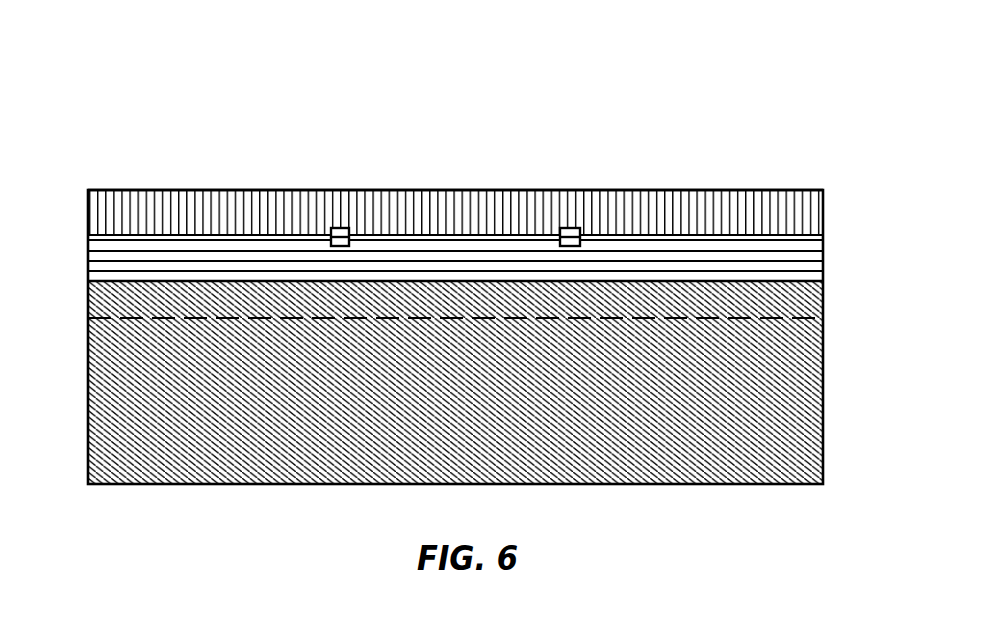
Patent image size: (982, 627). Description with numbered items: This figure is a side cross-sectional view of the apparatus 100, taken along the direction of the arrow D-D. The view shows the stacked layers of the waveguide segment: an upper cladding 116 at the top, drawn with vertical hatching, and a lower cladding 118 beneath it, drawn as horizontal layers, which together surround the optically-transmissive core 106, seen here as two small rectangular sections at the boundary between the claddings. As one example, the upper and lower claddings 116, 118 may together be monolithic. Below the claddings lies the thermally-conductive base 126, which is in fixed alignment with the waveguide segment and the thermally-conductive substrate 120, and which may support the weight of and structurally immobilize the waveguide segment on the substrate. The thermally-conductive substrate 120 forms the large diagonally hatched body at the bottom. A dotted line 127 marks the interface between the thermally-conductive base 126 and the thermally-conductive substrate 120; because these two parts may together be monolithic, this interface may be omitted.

The apparatus 100 is at (455, 268).
The optically-transmissive core 106 is at (349, 234).
The upper cladding 116 is at (485, 222).
The lower cladding 118 is at (485, 274).
The thermally-conductive substrate 120 is at (485, 404).
The thermally-conductive base 126 is at (485, 312).
The dotted line 127 is at (643, 319).